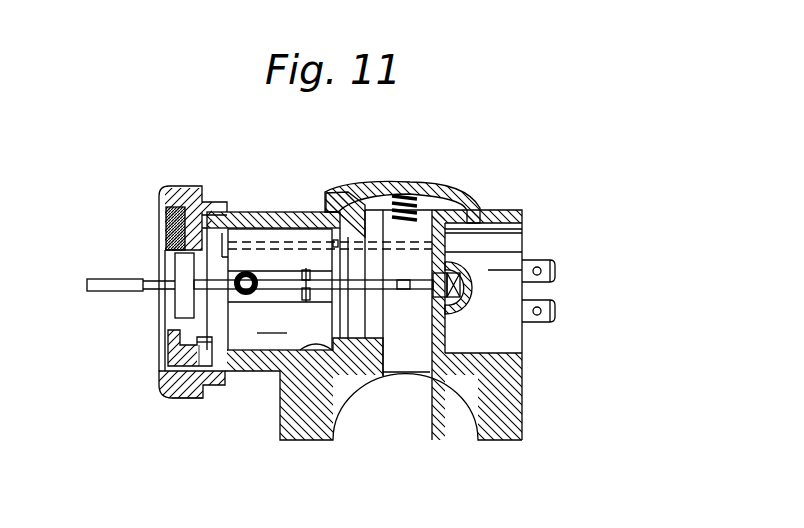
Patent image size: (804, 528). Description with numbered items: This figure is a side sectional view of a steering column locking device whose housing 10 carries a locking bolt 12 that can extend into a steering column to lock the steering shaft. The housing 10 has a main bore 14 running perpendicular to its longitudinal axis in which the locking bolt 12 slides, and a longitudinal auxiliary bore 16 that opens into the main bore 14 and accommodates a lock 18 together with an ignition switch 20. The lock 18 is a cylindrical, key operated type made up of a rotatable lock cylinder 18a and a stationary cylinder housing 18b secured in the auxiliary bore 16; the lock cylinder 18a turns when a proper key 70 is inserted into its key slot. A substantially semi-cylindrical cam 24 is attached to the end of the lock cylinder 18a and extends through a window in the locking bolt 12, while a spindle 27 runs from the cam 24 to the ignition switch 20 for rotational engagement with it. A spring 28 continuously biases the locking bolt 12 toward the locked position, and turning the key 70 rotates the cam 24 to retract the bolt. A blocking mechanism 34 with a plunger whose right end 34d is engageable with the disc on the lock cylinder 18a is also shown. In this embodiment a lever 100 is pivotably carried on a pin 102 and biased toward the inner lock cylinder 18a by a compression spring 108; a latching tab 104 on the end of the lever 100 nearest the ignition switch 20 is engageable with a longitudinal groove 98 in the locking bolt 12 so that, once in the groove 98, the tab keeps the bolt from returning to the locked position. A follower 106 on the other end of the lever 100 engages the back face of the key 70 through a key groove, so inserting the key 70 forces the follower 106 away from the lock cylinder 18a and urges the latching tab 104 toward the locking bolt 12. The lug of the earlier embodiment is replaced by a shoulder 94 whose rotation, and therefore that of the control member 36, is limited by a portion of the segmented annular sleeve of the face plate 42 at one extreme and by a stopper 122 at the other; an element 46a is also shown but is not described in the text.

The housing 10 is at (498, 220).
The locking bolt 12 is at (370, 252).
The main bore 14 is at (428, 330).
The auxiliary bore 16 is at (326, 355).
The lock 18 is at (252, 378).
The lock cylinder 18a is at (219, 315).
The cylinder housing 18b is at (278, 322).
The ignition switch 20 is at (517, 243).
The cam 24 is at (363, 330).
The spindle 27 is at (452, 241).
The spring 28 is at (412, 207).
The blocking mechanism 34 is at (280, 238).
The right end of plunger 34d is at (356, 217).
The control member 36 is at (158, 387).
The face plate 42 is at (170, 340).
The bearing flange 46a is at (207, 282).
The key 70 is at (95, 292).
The shoulder 94 is at (198, 231).
The longitudinal groove 98 is at (246, 271).
The lever 100 is at (322, 270).
The pin 102 is at (304, 300).
The latching tab 104 is at (393, 295).
The follower 106 is at (187, 340).
The compression spring 108 is at (287, 276).
The stopper 122 is at (222, 378).